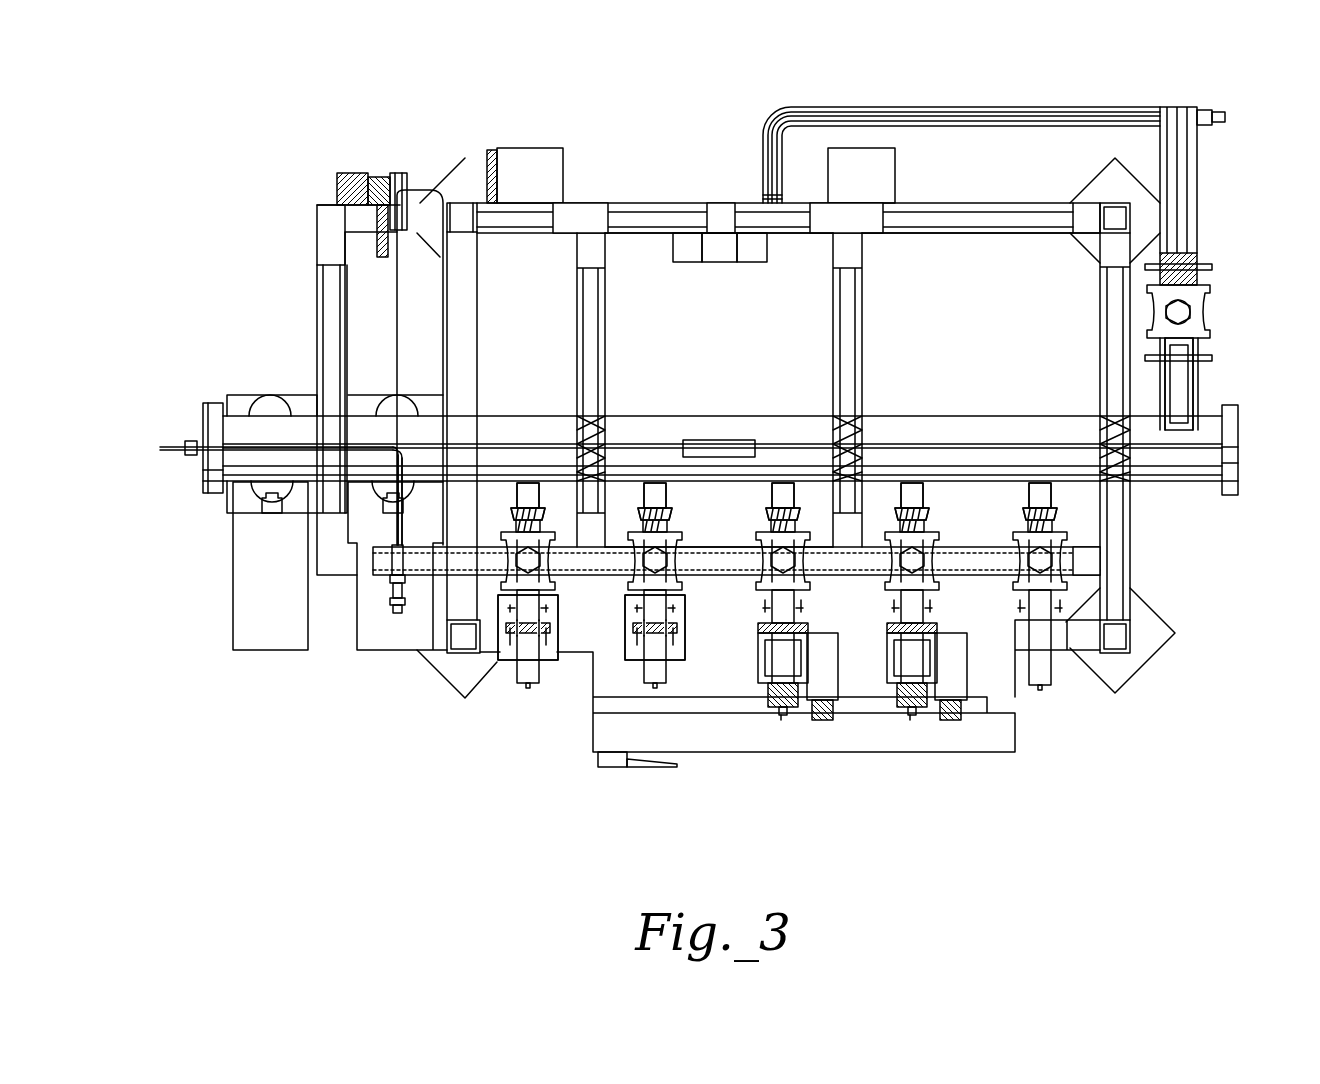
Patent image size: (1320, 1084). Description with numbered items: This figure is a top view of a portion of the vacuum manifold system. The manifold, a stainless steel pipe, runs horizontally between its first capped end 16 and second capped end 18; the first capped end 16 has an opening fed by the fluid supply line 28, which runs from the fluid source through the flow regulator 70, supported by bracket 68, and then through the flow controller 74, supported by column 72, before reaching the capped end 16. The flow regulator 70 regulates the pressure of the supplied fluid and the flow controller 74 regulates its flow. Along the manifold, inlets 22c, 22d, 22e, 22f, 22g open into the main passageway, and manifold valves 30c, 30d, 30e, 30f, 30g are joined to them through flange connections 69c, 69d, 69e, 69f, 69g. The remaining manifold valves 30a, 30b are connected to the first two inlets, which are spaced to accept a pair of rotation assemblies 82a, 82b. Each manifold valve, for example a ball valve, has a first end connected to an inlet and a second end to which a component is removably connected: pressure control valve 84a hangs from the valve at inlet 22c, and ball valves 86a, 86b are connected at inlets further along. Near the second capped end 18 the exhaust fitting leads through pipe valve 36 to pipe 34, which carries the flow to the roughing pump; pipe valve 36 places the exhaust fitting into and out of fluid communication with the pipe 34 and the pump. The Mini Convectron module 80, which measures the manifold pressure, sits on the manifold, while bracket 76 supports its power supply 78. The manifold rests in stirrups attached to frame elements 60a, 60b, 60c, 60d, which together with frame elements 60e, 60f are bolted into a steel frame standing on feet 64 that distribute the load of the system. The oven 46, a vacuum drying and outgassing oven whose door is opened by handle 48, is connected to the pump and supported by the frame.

The first capped end 16 is at (188, 418).
The second capped end 18 is at (1245, 428).
The inlet 22c is at (528, 487).
The inlet 22d is at (655, 487).
The inlet 22e is at (783, 487).
The inlet 22f is at (912, 487).
The inlet 22g is at (1040, 487).
The fluid supply line 28 is at (160, 448).
The manifold valve 30a is at (258, 500).
The manifold valve 30b is at (378, 500).
The manifold valve 30c is at (560, 585).
The manifold valve 30d is at (688, 585).
The manifold valve 30e is at (815, 585).
The manifold valve 30f is at (943, 585).
The manifold valve 30g is at (1075, 585).
The pipe 34 is at (1198, 197).
The pipe valve 36 is at (1198, 318).
The oven 46 is at (1020, 748).
The handle 48 is at (620, 770).
The frame element 60a is at (317, 325).
The frame element 60b is at (605, 296).
The frame element 60c is at (862, 296).
The frame element 60d is at (1130, 522).
The frame element 60e is at (710, 545).
The frame element 60f is at (640, 205).
The feet 64 is at (465, 158).
The bracket 68 is at (403, 180).
The flange connection 69c is at (548, 510).
The flange connection 69d is at (675, 510).
The flange connection 69e is at (803, 510).
The flange connection 69f is at (932, 510).
The flange connection 69g is at (1060, 510).
The flow regulator 70 is at (368, 165).
The column 72 is at (400, 575).
The flow controller 74 is at (398, 565).
The bracket 76 is at (748, 263).
The Mini Convectron power supply 78 is at (720, 205).
The Mini Convectron module 80 is at (712, 440).
The rotation assembly 82a is at (233, 618).
The rotation assembly 82b is at (357, 618).
The pressure control valve 84a is at (550, 665).
The ball valve 86a is at (845, 680).
The ball valve 86b is at (970, 680).